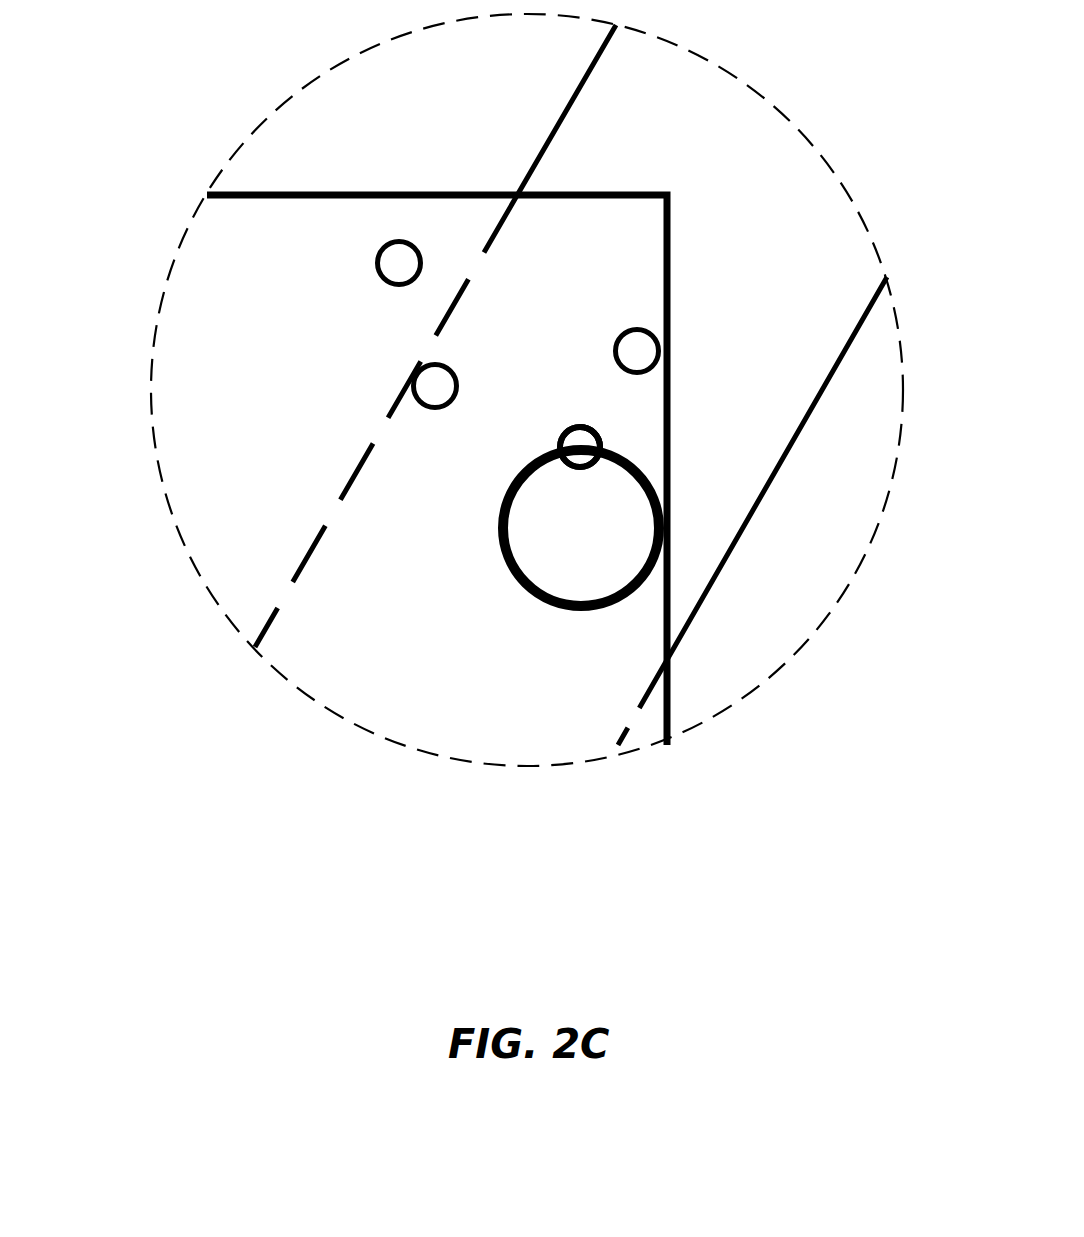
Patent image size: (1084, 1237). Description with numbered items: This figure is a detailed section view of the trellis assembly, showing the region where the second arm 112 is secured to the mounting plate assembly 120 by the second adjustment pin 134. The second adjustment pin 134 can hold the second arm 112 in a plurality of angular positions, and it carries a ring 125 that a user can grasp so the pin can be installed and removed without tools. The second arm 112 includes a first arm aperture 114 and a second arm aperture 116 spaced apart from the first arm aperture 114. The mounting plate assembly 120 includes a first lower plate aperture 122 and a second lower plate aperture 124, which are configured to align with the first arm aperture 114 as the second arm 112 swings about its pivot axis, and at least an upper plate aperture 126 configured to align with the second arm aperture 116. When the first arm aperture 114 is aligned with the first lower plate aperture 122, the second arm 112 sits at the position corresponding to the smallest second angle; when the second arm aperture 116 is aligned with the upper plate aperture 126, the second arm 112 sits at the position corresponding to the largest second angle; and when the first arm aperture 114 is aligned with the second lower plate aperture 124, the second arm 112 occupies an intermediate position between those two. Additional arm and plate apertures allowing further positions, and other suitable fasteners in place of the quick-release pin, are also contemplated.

The second arm 112 is at (838, 250).
The first arm aperture 114 is at (600, 430).
The second arm aperture 116 is at (650, 334).
The mounting plate assembly 120 is at (671, 705).
The first lower plate aperture 122 is at (593, 448).
The second lower plate aperture 124 is at (433, 365).
The ring 125 is at (553, 600).
The upper plate aperture 126 is at (380, 252).
The second adjustment pin 134 is at (606, 450).